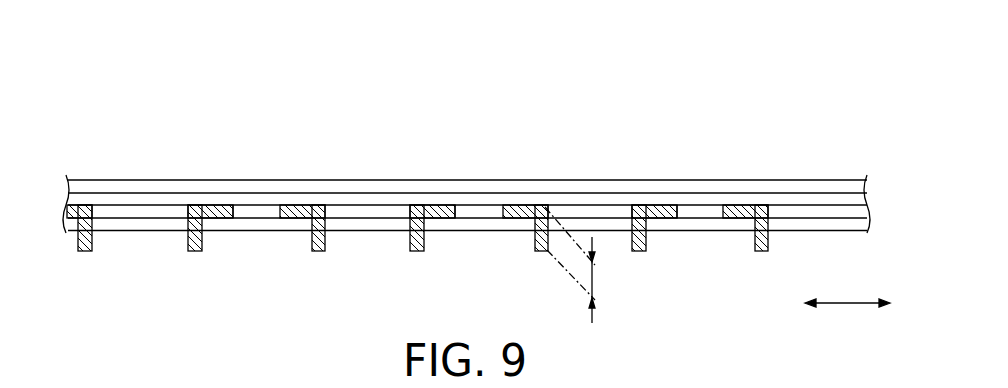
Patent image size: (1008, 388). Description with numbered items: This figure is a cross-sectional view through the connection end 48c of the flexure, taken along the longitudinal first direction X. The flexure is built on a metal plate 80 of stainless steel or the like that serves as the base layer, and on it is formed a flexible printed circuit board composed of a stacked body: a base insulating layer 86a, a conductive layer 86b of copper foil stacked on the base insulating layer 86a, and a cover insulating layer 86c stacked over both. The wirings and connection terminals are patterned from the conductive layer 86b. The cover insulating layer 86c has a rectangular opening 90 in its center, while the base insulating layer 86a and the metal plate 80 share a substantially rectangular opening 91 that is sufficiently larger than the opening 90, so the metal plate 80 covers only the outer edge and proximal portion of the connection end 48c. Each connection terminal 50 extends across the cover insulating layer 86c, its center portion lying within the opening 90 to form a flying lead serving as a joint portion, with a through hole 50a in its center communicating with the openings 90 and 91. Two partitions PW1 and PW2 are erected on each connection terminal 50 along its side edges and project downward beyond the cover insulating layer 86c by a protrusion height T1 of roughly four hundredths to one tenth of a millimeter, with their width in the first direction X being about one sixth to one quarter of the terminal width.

The metal plate 80 is at (833, 185).
The opening 91 is at (576, 193).
The base insulating layer 86a is at (102, 200).
The conductive layer 86b is at (66, 214).
The cover insulating layer 86c is at (122, 225).
The opening 90 is at (360, 222).
The connection end portion 48c is at (613, 176).
The connection terminal 50 is at (228, 208).
The through hole 50a is at (242, 210).
The partition PW1 is at (195, 252).
The partition PW2 is at (318, 253).
The protrusion height T1 is at (593, 282).
The first direction X is at (847, 291).